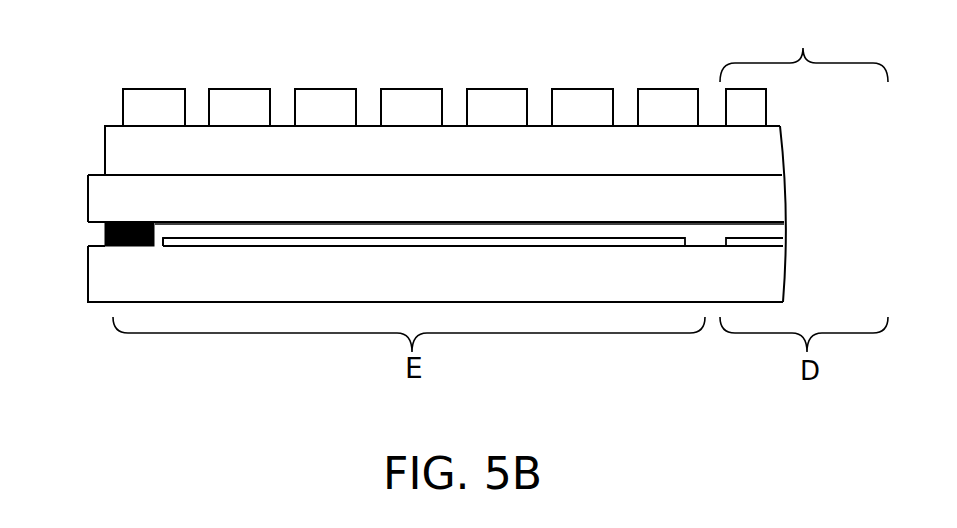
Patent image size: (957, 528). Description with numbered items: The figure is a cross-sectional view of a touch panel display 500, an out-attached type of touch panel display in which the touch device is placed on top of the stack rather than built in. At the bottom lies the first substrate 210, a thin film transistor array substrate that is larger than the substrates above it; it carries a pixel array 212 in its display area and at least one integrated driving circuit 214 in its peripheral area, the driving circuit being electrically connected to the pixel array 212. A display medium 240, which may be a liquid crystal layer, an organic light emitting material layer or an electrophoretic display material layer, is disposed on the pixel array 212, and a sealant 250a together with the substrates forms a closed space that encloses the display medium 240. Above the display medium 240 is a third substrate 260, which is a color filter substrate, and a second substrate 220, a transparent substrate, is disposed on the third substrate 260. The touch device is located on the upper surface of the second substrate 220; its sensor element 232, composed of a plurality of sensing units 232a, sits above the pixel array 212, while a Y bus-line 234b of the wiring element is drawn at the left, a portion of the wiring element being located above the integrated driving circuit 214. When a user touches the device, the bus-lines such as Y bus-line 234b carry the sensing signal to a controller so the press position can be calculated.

The touch panel display 500 is at (873, 448).
The first substrate 210 is at (775, 275).
The pixel array 212 is at (775, 242).
The integrated driving circuit 214 is at (170, 242).
The second substrate 220 is at (768, 153).
The sensor element 232 is at (804, 50).
The sensing unit 232a is at (758, 108).
The Y bus-line 234b is at (135, 97).
The display medium 240 is at (775, 232).
The sealant 250a is at (105, 233).
The third substrate 260 is at (775, 197).